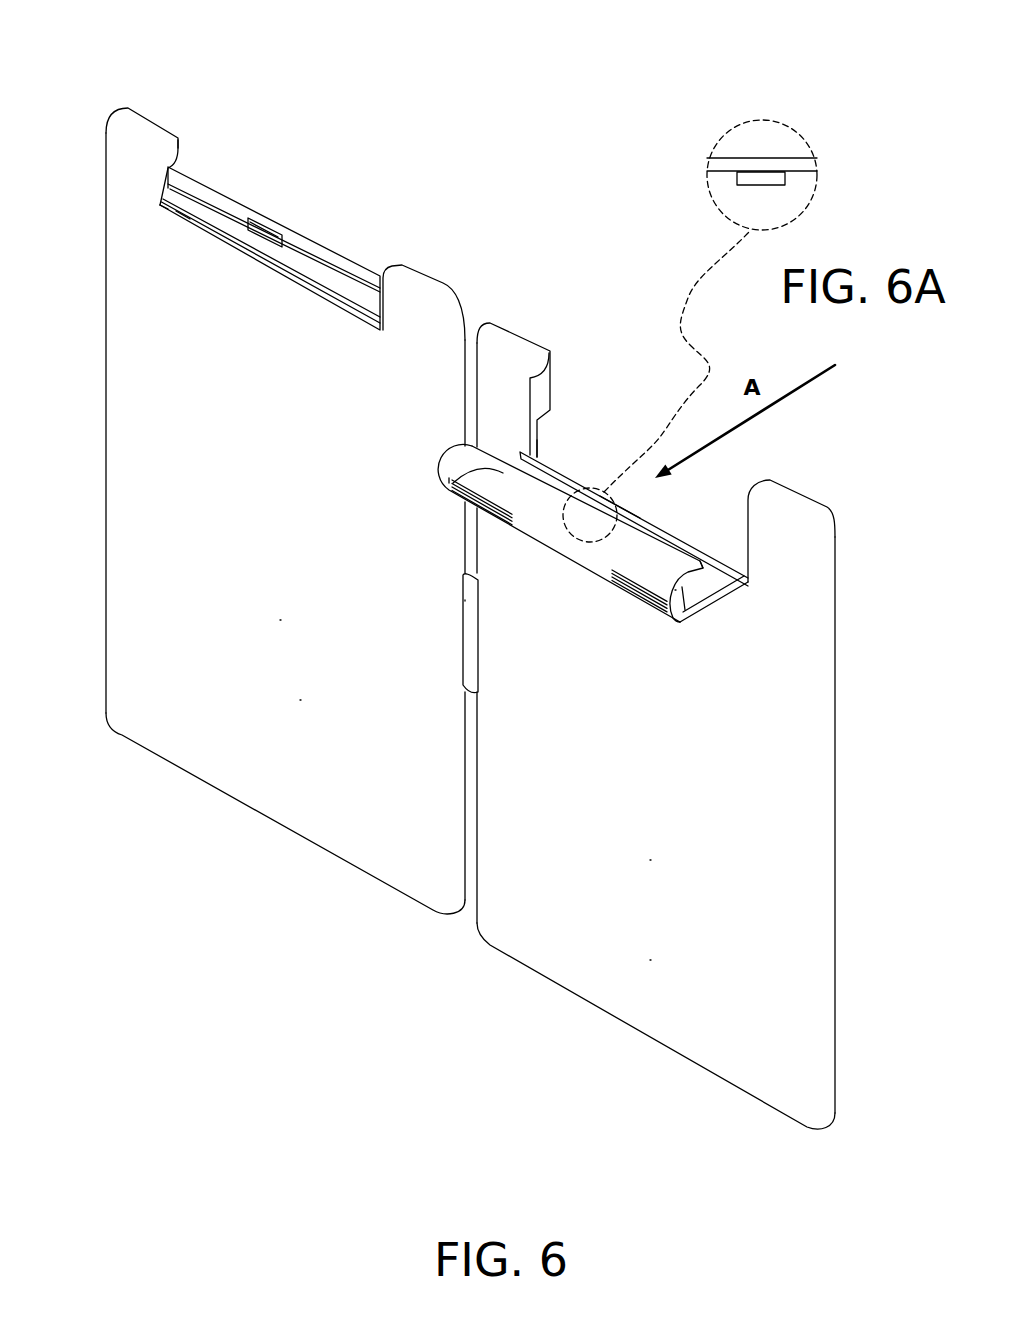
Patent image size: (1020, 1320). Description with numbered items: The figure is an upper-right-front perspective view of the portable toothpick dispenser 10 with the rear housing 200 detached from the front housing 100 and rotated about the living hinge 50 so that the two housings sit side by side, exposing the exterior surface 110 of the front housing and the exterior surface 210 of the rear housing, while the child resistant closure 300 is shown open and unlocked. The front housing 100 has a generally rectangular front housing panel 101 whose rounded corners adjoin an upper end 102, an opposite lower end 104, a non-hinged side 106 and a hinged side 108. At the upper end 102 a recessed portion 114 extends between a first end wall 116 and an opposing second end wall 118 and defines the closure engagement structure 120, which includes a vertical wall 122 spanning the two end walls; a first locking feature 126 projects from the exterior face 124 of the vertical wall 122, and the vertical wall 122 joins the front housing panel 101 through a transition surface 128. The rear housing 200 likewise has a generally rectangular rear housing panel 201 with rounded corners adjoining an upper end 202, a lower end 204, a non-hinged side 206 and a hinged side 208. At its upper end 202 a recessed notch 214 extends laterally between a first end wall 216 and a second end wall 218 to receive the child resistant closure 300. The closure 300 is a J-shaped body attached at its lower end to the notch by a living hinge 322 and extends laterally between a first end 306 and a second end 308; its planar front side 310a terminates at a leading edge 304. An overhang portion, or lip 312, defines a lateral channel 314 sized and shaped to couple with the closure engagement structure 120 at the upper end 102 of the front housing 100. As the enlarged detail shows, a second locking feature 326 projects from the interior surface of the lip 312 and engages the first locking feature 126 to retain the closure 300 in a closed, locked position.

In FIG. 6, the portable toothpick dispenser 10 is at (512, 168).
In FIG. 6, the living hinge 50 is at (464, 622).
In FIG. 6, the front housing 100 is at (300, 848).
In FIG. 6, the front housing panel 101 is at (210, 680).
In FIG. 6, the upper end 102 is at (145, 130).
In FIG. 6, the lower end 104 is at (277, 822).
In FIG. 6, the non-hinged side 106 is at (105, 452).
In FIG. 6, the hinged side 108 is at (467, 800).
In FIG. 6, the exterior surface 110 is at (258, 587).
In FIG. 6, the recessed portion 114 is at (233, 180).
In FIG. 6, the first end wall 116 is at (175, 153).
In FIG. 6, the second end wall 118 is at (383, 272).
In FIG. 6, the closure engagement structure 120 is at (181, 203).
In FIG. 6, the vertical wall 122 is at (298, 233).
In FIG. 6, the exterior face 124 is at (310, 260).
In FIG. 6, the first locking feature 126 is at (260, 232).
In FIG. 6, the transition surface 128 is at (187, 212).
In FIG. 6, the rear housing 200 is at (643, 1053).
In FIG. 6, the rear housing panel 201 is at (600, 892).
In FIG. 6, the upper end 202 is at (503, 332).
In FIG. 6, the lower end 204 is at (618, 1018).
In FIG. 6, the non-hinged side 206 is at (836, 628).
In FIG. 6, the hinged side 208 is at (478, 743).
In FIG. 6, the exterior surface 210 is at (636, 824).
In FIG. 6, the recessed notch 214 is at (592, 452).
In FIG. 6, the first end wall 216 is at (746, 548).
In FIG. 6, the second end wall 218 is at (543, 385).
In FIG. 6, the child resistant closure 300 is at (536, 545).
In FIG. 6, the leading edge 304 is at (640, 532).
In FIG. 6A, the leading edge 304 is at (795, 165).
In FIG. 6, the first end 306 is at (729, 600).
In FIG. 6, the second end 308 is at (452, 473).
In FIG. 6, the planar front side 310a is at (455, 482).
In FIG. 6, the lip 312 is at (703, 567).
In FIG. 6, the lateral channel 314 is at (688, 589).
In FIG. 6, the living hinge 322 is at (547, 463).
In FIG. 6A, the second locking feature 326 is at (763, 181).